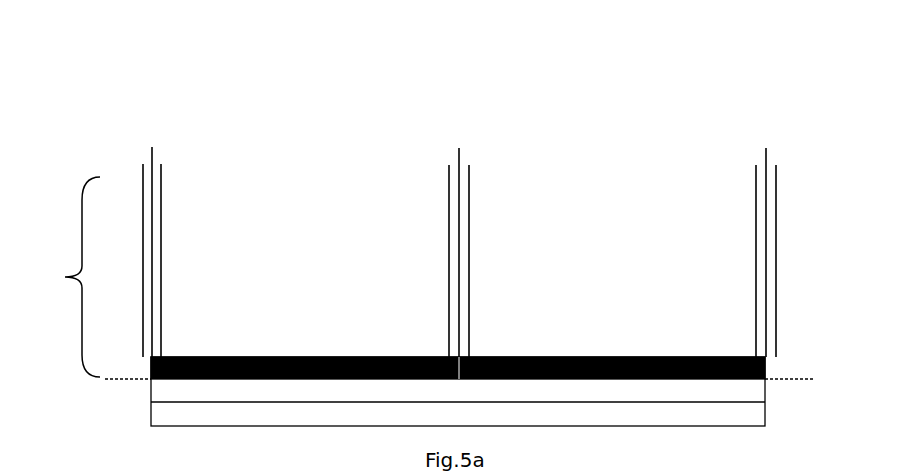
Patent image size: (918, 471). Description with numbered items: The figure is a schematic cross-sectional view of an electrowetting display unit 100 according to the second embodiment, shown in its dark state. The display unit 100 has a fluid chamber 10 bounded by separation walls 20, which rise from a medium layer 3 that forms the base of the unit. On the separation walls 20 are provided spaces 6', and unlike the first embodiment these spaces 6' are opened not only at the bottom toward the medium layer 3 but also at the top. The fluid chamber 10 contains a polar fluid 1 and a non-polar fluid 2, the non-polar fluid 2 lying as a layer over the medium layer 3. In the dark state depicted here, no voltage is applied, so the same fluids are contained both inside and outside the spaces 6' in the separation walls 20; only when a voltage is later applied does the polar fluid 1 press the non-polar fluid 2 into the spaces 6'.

The electrowetting display unit 100 is at (323, 77).
The fluid chamber 10 is at (68, 277).
The separation walls 20 is at (153, 152).
The spaces 6' is at (467, 252).
The polar fluid 1 is at (283, 238).
The non-polar fluid 2 is at (285, 380).
The medium layer 3 is at (458, 391).